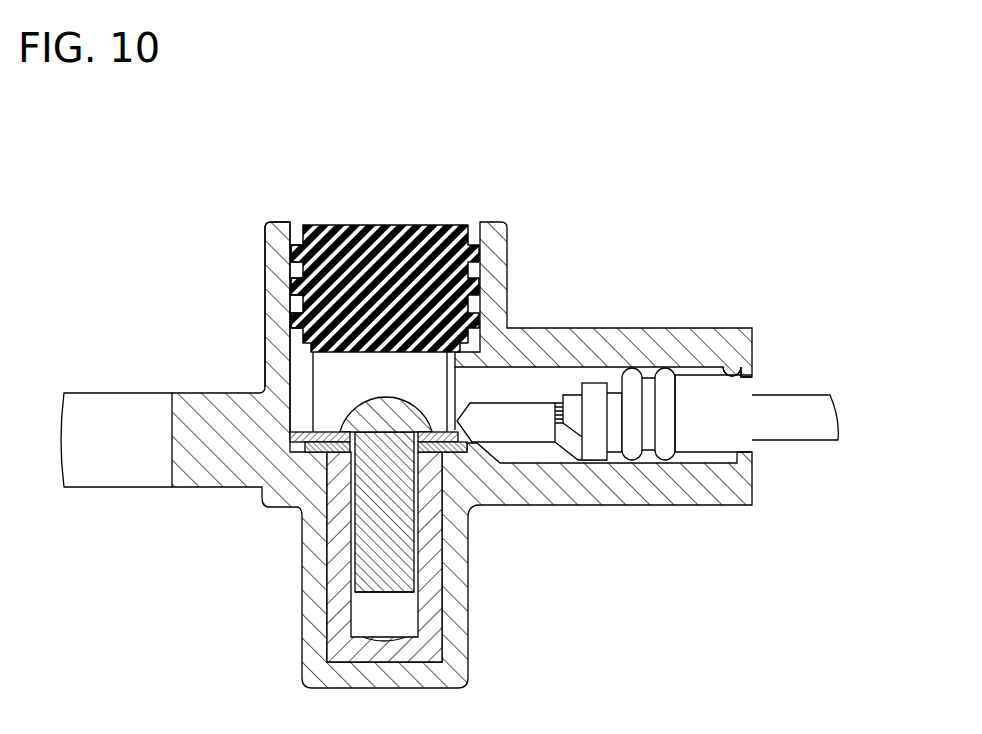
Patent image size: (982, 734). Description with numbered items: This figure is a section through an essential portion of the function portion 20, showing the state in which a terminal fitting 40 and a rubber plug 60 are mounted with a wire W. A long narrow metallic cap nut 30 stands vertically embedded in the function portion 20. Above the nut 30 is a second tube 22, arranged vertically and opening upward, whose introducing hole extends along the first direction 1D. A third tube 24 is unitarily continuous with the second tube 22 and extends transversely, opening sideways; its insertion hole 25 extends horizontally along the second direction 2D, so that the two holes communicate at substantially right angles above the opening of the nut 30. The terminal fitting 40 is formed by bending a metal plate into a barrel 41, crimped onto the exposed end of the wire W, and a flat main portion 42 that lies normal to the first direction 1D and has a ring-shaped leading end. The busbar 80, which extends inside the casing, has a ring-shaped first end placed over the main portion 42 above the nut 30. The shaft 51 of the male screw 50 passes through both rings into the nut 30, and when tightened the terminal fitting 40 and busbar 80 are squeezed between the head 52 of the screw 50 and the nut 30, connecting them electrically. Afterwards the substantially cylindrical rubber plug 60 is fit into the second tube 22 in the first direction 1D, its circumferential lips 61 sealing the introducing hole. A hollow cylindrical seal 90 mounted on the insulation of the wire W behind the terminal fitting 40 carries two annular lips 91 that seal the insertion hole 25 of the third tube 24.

The function portion 20 is at (490, 222).
The second tube 22 is at (270, 300).
The third tube 24 is at (703, 340).
The insertion hole 25 is at (740, 378).
The cap nut 30 is at (430, 578).
The terminal fitting 40 is at (594, 395).
The barrel 41 is at (533, 415).
The main portion 42 is at (327, 430).
The male screw 50 is at (382, 593).
The shaft 51 is at (365, 522).
The head 52 is at (400, 415).
The rubber plug 60 is at (380, 224).
The circumferential lips 61 is at (291, 287).
The busbar 80 is at (305, 448).
The seal 90 is at (650, 443).
The annular lips 91 is at (665, 375).
The wire W is at (790, 410).
The first direction 1D is at (390, 73).
The second direction 2D is at (923, 416).